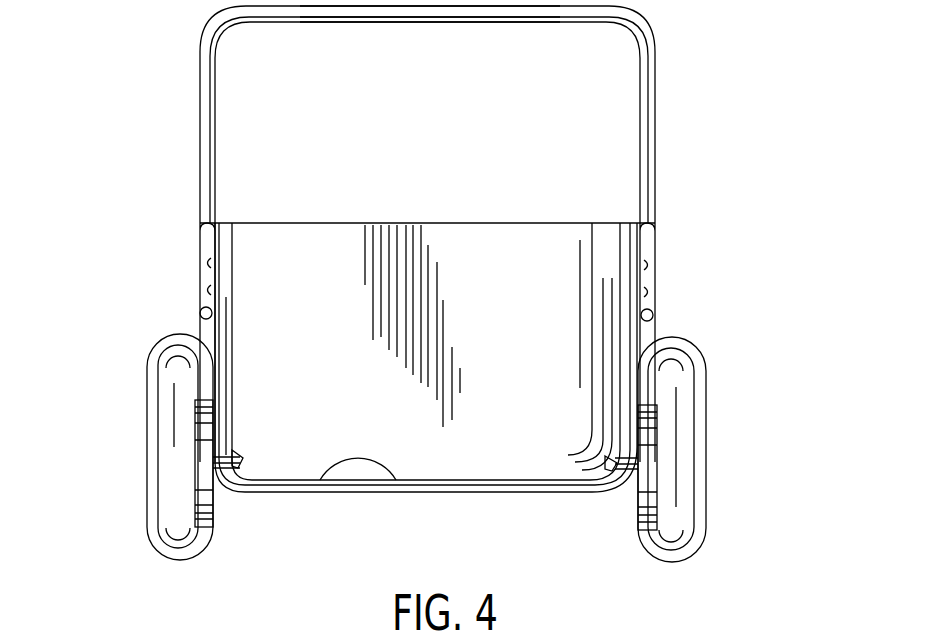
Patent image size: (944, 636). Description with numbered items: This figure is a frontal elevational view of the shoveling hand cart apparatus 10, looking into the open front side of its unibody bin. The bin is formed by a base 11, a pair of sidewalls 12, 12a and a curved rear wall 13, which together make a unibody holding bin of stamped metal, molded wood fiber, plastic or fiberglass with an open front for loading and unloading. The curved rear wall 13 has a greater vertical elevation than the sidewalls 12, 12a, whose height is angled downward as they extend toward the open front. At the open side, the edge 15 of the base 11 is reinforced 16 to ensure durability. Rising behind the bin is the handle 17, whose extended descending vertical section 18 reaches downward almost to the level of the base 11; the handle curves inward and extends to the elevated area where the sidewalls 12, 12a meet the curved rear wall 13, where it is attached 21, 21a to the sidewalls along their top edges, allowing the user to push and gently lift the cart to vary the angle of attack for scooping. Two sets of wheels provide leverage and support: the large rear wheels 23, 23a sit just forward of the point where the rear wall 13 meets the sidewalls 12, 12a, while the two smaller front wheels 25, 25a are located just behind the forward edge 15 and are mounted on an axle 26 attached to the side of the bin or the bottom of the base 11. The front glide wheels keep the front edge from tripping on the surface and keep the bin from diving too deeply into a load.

The shoveling hand cart apparatus 10 is at (700, 90).
The base 11 is at (427, 465).
The sidewall 12 is at (206, 240).
The sidewall 12a is at (649, 245).
The curved rear wall 13 is at (325, 240).
The edge 15 is at (396, 466).
The reinforcement 16 is at (525, 487).
The handle 17 is at (428, 20).
The extended descending vertical section 18 is at (647, 160).
The attachment 21 is at (203, 310).
The attachment 21a is at (651, 311).
The rear wheel 23 is at (152, 392).
The rear wheel 23a is at (700, 390).
The front wheel 25 is at (205, 462).
The front wheel 25a is at (657, 465).
The axle 26 is at (238, 452).